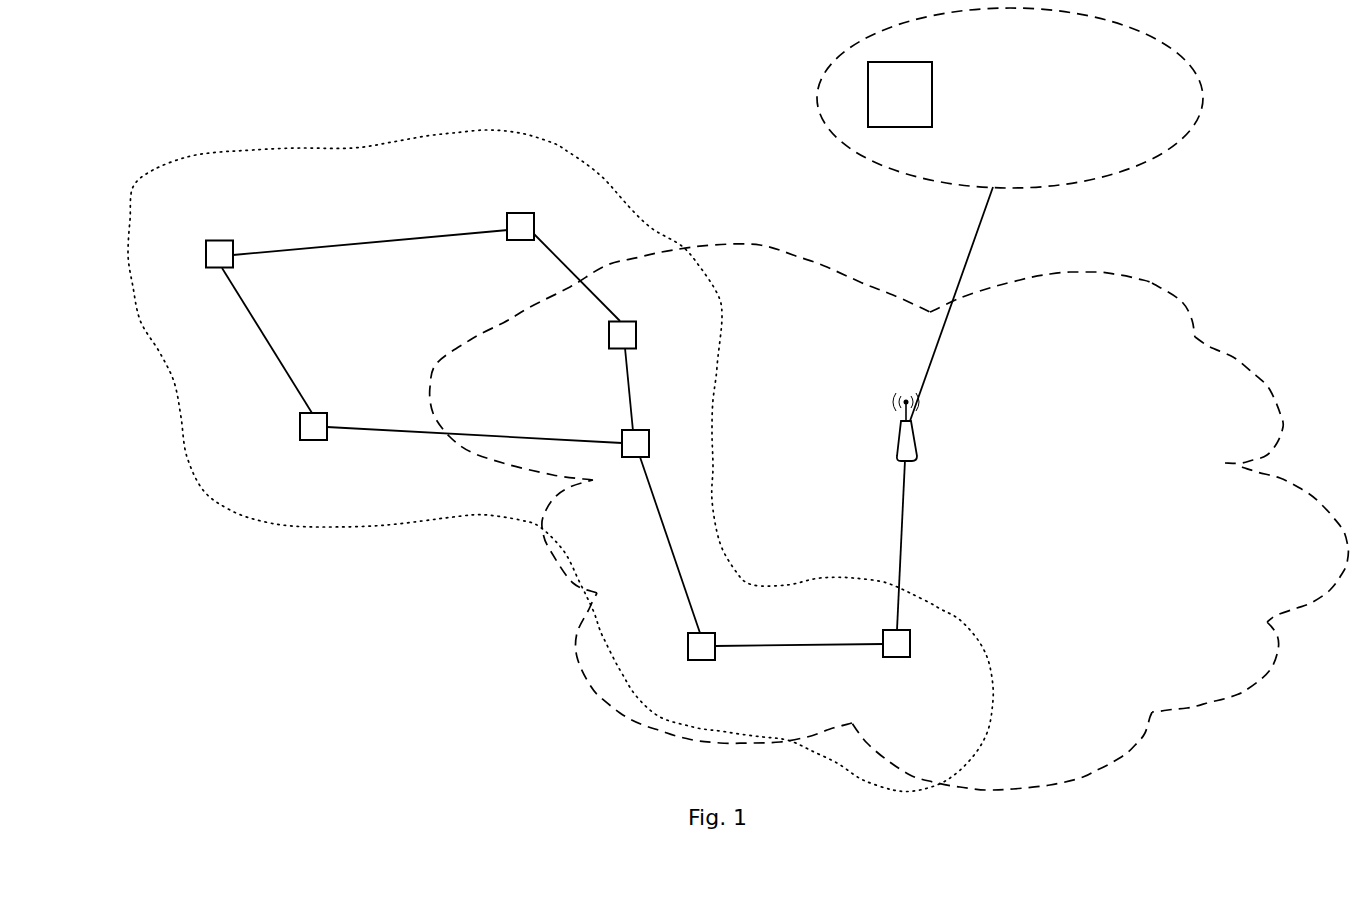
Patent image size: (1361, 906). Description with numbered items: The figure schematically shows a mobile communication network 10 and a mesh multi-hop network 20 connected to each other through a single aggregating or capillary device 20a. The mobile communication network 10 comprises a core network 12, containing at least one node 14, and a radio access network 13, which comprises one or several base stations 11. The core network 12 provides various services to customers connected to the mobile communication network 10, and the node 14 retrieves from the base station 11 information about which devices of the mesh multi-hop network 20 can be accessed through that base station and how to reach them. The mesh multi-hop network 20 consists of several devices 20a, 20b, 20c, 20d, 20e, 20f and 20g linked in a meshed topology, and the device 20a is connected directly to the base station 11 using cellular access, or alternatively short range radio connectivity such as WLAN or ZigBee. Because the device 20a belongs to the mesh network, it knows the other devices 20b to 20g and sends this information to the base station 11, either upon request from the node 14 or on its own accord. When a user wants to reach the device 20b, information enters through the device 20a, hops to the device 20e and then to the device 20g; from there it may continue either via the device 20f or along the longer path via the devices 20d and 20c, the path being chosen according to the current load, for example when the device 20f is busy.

The mobile communication network 10 is at (772, 157).
The base station 11 is at (917, 446).
The core network 12 is at (1203, 95).
The radio access network 13 is at (1153, 283).
The node 14 is at (900, 94).
The mesh multi-hop network 20 is at (273, 523).
The device 20a is at (911, 643).
The device 20b is at (520, 213).
The device 20c is at (221, 240).
The device 20d is at (307, 441).
The device 20e is at (702, 661).
The device 20f is at (637, 335).
The device 20g is at (649, 443).